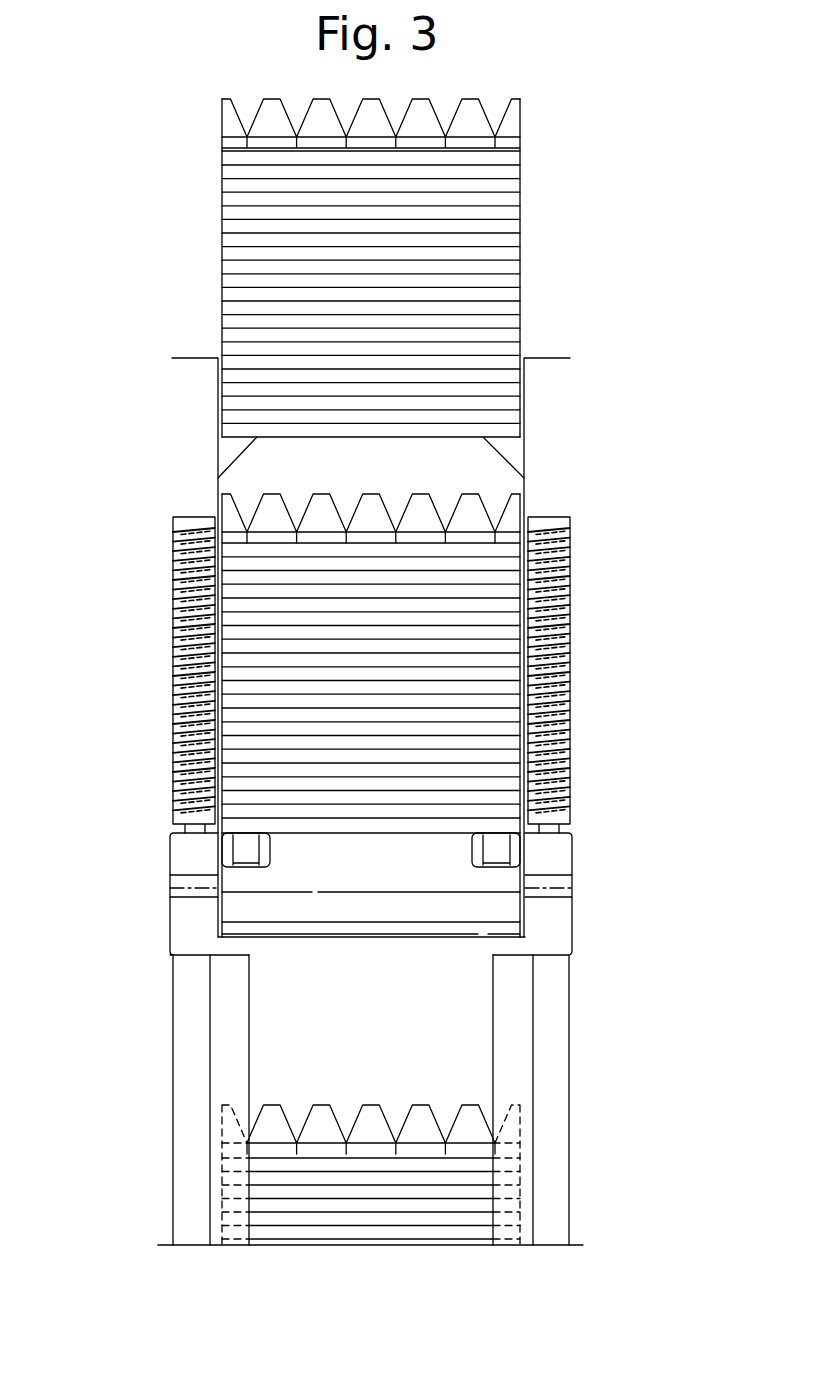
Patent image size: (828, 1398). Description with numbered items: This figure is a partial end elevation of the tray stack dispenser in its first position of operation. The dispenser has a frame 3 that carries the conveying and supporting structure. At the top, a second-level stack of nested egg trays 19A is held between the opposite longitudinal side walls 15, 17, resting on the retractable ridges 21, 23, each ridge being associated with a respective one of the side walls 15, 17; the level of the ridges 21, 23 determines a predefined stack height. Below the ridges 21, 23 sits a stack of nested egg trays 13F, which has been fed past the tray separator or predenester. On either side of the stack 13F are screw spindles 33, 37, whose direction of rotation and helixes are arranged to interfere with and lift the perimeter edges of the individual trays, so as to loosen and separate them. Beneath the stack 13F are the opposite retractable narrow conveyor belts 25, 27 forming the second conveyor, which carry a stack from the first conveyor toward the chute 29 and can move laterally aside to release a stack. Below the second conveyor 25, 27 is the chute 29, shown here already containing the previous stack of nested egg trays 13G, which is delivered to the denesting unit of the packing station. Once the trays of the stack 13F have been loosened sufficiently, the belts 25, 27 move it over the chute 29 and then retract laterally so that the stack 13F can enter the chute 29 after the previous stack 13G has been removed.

The frame 3 is at (573, 928).
The stack of nested egg trays 13F is at (453, 689).
The previous stack of nested egg trays 13G is at (460, 1187).
The longitudinal side wall 15 is at (195, 357).
The longitudinal side wall 17 is at (548, 357).
The second-level stack of nested egg trays 19A is at (430, 225).
The retractable ridge 21 is at (232, 450).
The retractable ridge 23 is at (515, 448).
The retractable narrow conveyor belt 25 is at (240, 845).
The retractable narrow conveyor belt 27 is at (500, 845).
The chute 29 is at (553, 1077).
The screw spindle 33 is at (173, 680).
The screw spindle 37 is at (558, 742).